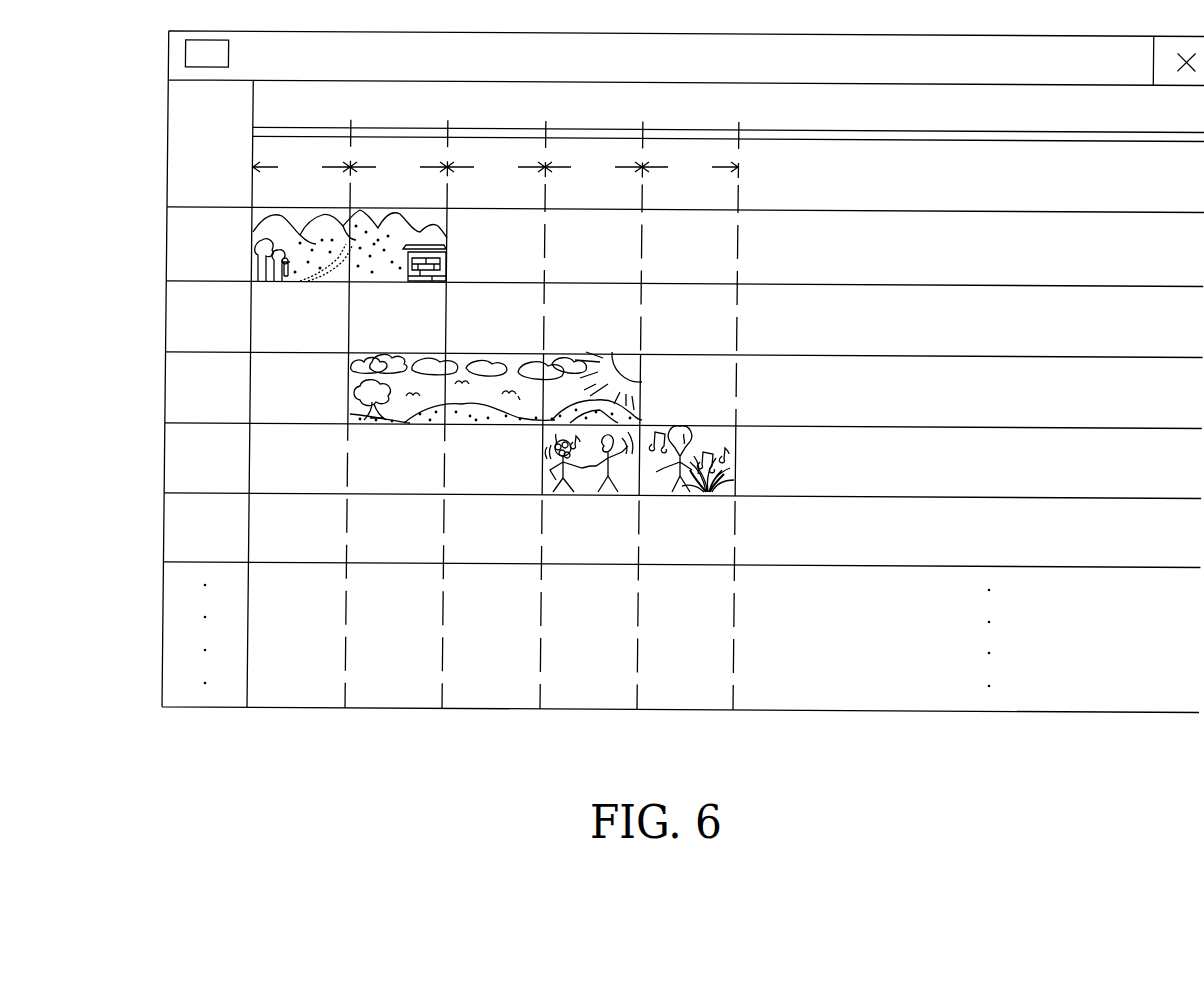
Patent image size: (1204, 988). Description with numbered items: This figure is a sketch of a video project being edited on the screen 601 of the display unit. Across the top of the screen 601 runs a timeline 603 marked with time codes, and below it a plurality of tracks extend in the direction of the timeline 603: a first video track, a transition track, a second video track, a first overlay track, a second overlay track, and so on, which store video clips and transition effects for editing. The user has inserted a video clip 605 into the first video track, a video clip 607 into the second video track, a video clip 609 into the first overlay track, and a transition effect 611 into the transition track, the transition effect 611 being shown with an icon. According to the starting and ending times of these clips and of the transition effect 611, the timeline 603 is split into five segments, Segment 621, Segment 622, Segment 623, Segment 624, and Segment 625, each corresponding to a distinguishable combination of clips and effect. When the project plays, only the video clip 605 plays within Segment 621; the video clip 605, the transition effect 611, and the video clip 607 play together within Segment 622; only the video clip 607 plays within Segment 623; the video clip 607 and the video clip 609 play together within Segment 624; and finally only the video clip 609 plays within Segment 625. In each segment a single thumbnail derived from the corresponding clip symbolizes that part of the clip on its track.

The screen 601 is at (208, 792).
The timeline 603 is at (883, 130).
The video clip 605 is at (253, 262).
The video clip 607 is at (393, 424).
The video clip 609 is at (597, 495).
The transition effect 611 is at (350, 332).
The segment 621 is at (301, 167).
The segment 622 is at (398, 167).
The segment 623 is at (496, 167).
The segment 624 is at (593, 167).
The segment 625 is at (690, 167).